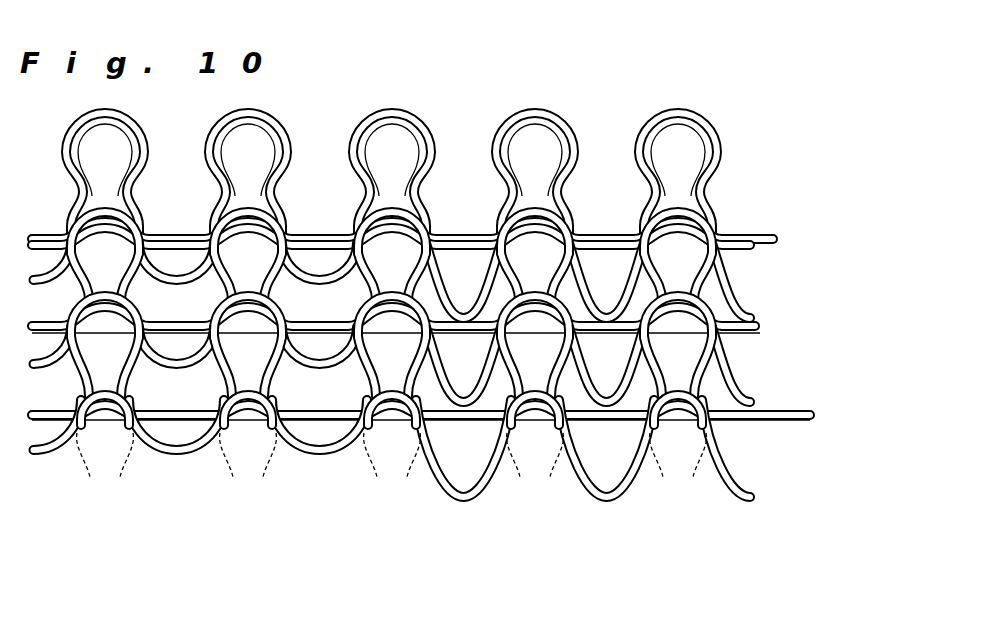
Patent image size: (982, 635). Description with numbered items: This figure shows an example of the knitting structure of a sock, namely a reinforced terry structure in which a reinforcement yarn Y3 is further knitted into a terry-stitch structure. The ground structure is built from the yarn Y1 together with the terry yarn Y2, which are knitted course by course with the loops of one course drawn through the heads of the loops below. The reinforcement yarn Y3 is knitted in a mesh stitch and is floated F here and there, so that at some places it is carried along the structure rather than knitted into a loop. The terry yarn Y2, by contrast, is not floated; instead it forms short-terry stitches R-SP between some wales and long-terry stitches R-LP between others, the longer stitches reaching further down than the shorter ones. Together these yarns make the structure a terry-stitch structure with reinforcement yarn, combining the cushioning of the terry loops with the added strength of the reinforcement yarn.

The first yarn Y1 is at (440, 192).
The terry yarn Y2 is at (457, 297).
The reinforcement yarn Y3 is at (478, 191).
The float F is at (238, 436).
The short-terry stitch R-SP is at (298, 469).
The long-terry stitch R-LP is at (447, 508).